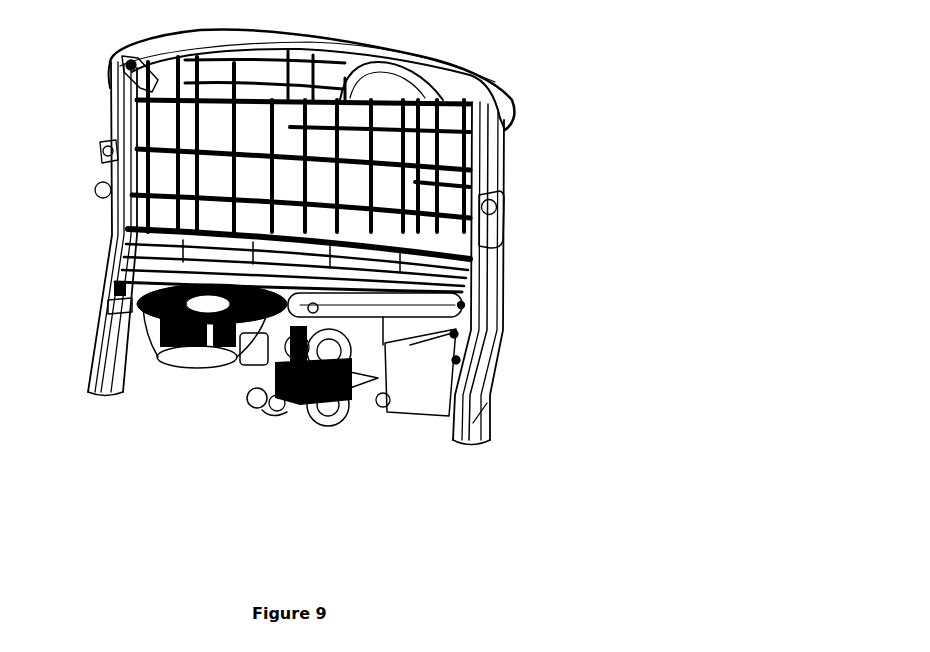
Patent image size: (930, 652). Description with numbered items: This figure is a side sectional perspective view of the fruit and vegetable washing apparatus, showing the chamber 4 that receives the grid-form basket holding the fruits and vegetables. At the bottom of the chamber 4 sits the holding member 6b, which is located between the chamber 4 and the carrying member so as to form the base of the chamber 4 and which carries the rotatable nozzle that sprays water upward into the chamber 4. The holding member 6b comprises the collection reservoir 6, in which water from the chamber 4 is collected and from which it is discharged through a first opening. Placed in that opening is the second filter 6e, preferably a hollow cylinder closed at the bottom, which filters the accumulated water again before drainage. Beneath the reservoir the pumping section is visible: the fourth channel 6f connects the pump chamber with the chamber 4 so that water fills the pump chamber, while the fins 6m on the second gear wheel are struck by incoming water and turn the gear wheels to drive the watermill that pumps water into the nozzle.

The chamber 4 is at (497, 167).
The collection reservoir 6 is at (490, 380).
The holding member 6b is at (368, 310).
The second filter 6e is at (160, 330).
The fourth channel 6f is at (252, 350).
The fins 6m is at (327, 423).